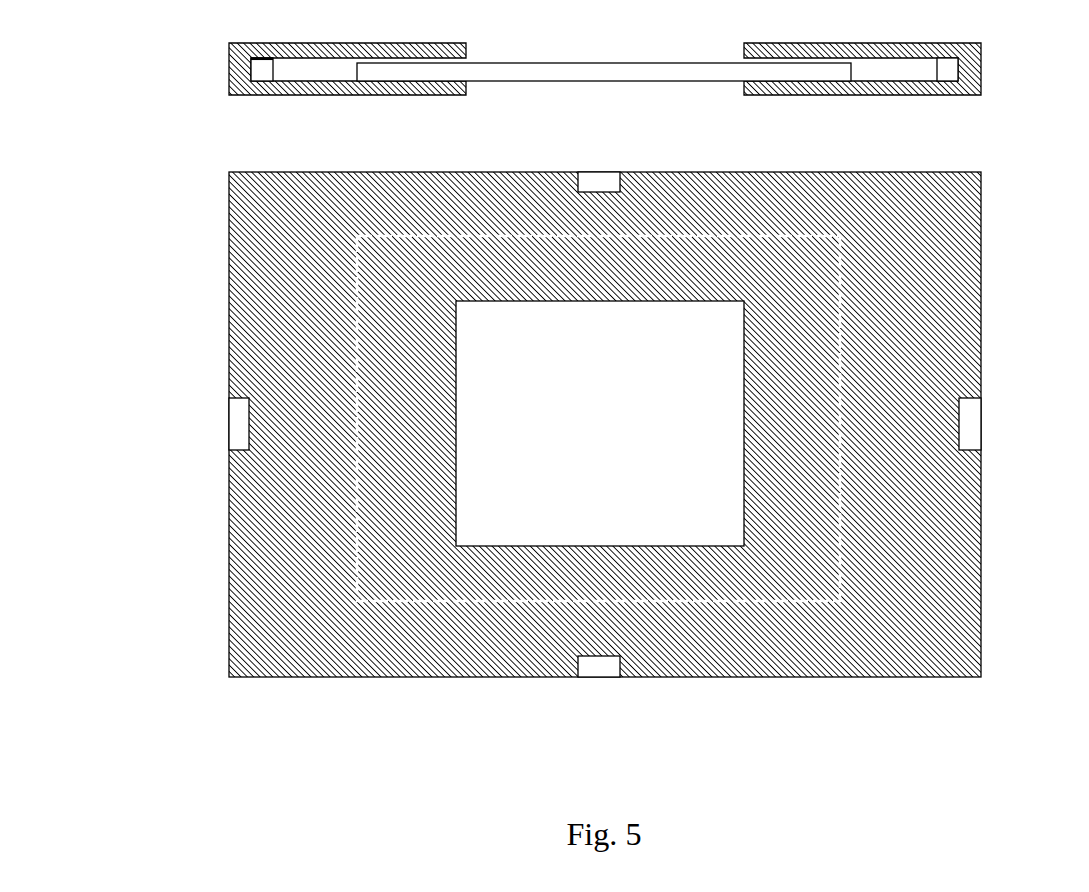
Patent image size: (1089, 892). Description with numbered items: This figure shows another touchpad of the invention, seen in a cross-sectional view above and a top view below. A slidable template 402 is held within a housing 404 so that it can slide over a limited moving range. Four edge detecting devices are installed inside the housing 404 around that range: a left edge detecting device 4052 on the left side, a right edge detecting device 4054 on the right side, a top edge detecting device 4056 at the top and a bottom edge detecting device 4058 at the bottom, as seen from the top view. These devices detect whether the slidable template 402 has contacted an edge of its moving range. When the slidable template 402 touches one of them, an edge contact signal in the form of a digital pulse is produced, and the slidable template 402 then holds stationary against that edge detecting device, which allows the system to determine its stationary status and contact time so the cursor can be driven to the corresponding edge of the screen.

The slidable template 402 is at (530, 365).
The housing 404 is at (612, 360).
The left edge detecting device 4052 is at (263, 75).
The right edge detecting device 4054 is at (947, 63).
The top edge detecting device 4056 is at (605, 182).
The bottom edge detecting device 4058 is at (604, 665).